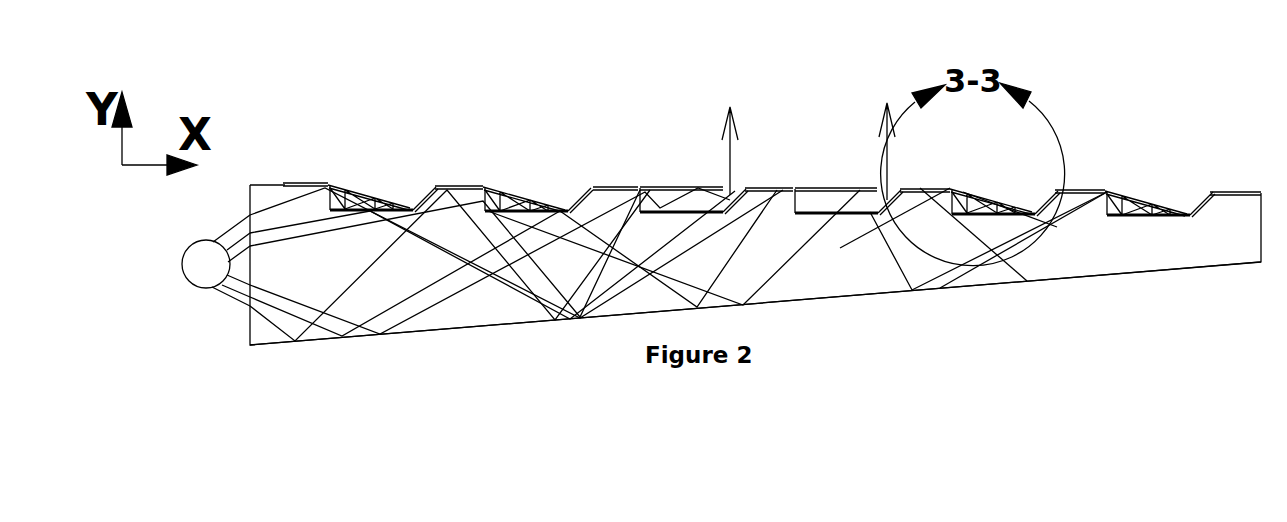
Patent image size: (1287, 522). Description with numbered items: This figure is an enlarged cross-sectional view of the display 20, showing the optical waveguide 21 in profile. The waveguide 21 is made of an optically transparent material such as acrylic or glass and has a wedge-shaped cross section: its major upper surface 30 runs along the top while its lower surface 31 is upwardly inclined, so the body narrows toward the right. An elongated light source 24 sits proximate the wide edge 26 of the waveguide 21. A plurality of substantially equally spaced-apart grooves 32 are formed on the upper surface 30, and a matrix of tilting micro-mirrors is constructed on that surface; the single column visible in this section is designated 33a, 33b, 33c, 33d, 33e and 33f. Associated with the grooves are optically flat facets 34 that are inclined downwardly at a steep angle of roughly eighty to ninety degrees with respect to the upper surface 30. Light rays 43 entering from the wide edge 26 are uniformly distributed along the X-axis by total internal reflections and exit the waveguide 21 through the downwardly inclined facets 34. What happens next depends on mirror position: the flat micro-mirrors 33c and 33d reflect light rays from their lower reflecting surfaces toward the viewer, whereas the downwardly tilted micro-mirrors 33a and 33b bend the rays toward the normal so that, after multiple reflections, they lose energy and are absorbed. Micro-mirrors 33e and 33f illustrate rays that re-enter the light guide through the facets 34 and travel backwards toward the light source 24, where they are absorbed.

The display 20 is at (290, 130).
The optical waveguide 21 is at (888, 270).
The elongated light source 24 is at (203, 267).
The first end surface 26 is at (243, 312).
The major upper surface 30 is at (268, 187).
The lower surface 31 is at (1163, 270).
The grooves 32 is at (400, 183).
The tilting micro-mirror 33a is at (370, 192).
The tilting micro-mirror 33b is at (525, 195).
The tilting micro-mirror 33c is at (677, 186).
The tilting micro-mirror 33d is at (826, 193).
The tilting micro-mirror 33e is at (993, 200).
The tilting micro-mirror 33f is at (1147, 200).
The optically flat facets 34 is at (333, 183).
The light rays 43 is at (455, 297).